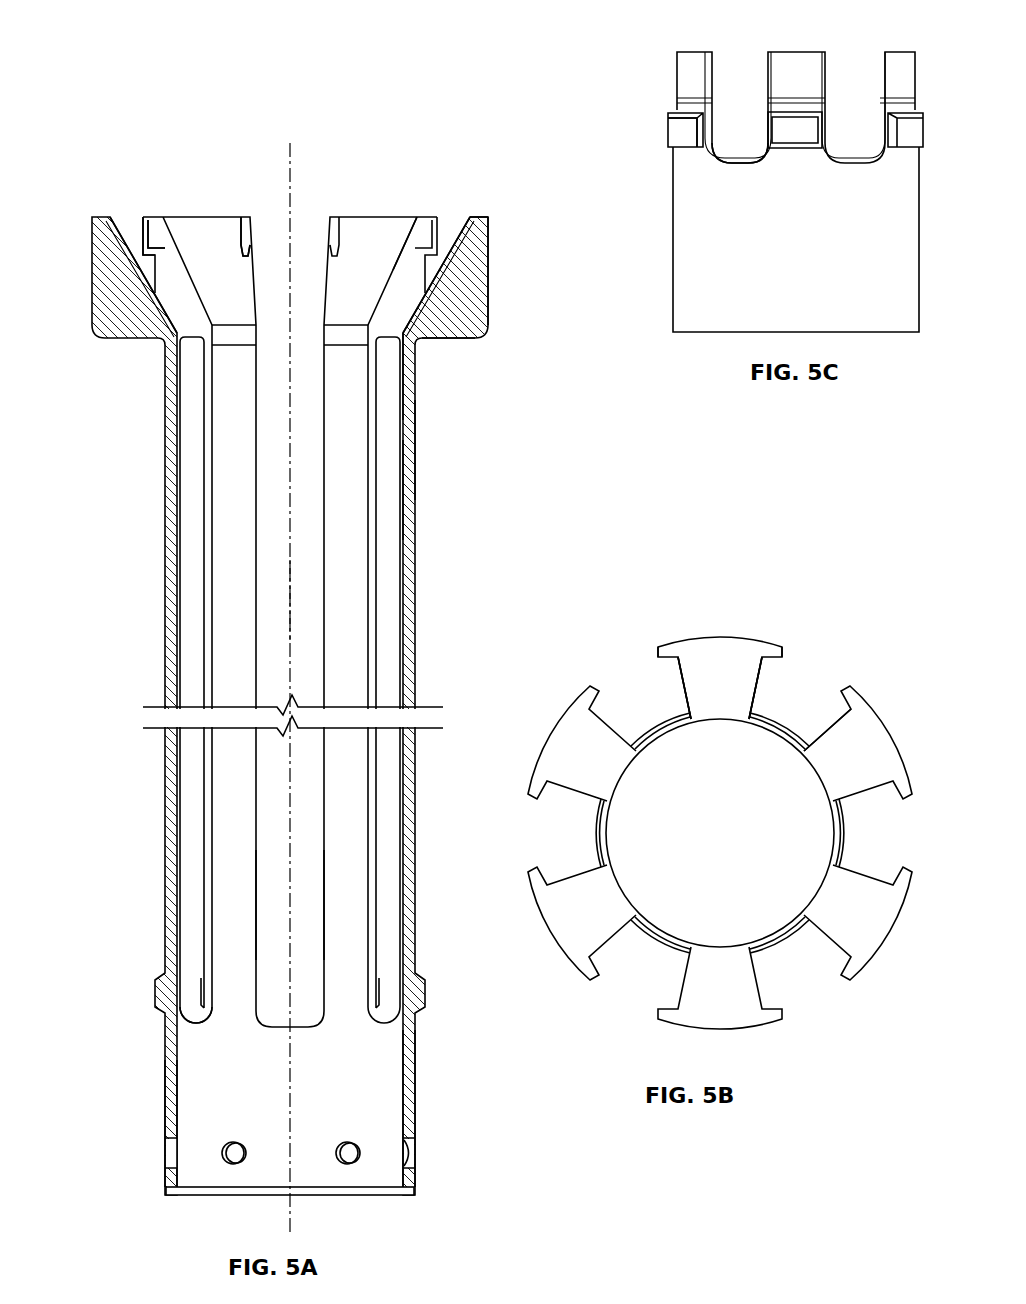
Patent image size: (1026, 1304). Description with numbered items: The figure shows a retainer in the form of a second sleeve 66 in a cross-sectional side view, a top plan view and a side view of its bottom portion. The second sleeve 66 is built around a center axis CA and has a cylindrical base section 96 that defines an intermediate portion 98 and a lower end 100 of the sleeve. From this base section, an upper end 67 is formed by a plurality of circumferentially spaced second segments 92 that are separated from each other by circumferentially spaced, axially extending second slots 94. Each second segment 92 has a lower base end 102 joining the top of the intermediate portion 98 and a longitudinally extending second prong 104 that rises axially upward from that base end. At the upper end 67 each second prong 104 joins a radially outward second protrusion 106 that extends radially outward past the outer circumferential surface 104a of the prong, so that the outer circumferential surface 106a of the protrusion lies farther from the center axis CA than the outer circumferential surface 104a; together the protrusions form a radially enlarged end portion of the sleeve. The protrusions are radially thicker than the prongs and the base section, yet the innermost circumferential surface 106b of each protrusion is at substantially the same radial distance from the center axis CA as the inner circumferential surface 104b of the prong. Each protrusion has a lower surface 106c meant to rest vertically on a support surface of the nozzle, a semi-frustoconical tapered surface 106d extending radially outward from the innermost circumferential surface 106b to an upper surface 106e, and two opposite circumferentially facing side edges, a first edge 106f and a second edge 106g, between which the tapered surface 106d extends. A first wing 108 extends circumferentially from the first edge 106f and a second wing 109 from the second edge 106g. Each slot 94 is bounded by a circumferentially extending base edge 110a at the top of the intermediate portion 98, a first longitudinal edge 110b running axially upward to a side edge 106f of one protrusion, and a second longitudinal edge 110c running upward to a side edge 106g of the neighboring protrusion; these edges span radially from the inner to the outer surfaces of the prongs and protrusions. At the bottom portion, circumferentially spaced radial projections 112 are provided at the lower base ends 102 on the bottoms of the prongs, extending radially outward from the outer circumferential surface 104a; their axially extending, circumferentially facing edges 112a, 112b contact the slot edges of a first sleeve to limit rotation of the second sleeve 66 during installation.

In FIG. 5A, the second sleeve 66 is at (138, 1042).
In FIG. 5C, the second sleeve 66 is at (690, 348).
In FIG. 5B, the second sleeve 66 is at (729, 795).
In FIG. 5A, the upper end 67 is at (87, 147).
In FIG. 5A, the second segments 92 is at (229, 231).
In FIG. 5B, the second segments 92 is at (729, 795).
In FIG. 5A, the second slots 94 is at (280, 200).
In FIG. 5B, the second slots 94 is at (833, 670).
In FIG. 5A, the cylindrical base section 96 is at (410, 1115).
In FIG. 5A, the intermediate portion 98 is at (140, 1088).
In FIG. 5A, the lower end 100 is at (138, 1207).
In FIG. 5A, the lower base end 102 is at (230, 1028).
In FIG. 5C, the lower base end 102 is at (707, 173).
In FIG. 5A, the second prong 104 is at (347, 640).
In FIG. 5C, the second prong 104 is at (748, 201).
In FIG. 5A, the outer circumferential surface 104a is at (417, 452).
In FIG. 5A, the inner circumferential surface 104b is at (404, 495).
In FIG. 5A, the radially outward second protrusion 106 is at (395, 227).
In FIG. 5B, the radially outward second protrusion 106 is at (712, 648).
In FIG. 5A, the outer circumferential surface 106a is at (490, 267).
In FIG. 5A, the innermost circumferential surface 106b is at (385, 338).
In FIG. 5A, the lower surface 106c is at (447, 335).
In FIG. 5A, the tapered surface 106d is at (360, 232).
In FIG. 5A, the upper surface 106e is at (480, 215).
In FIG. 5A, the first edge 106f is at (182, 305).
In FIG. 5B, the first edge 106f is at (687, 710).
In FIG. 5A, the second edge 106g is at (403, 300).
In FIG. 5B, the second edge 106g is at (760, 672).
In FIG. 5A, the first wing 108 is at (145, 222).
In FIG. 5B, the first wing 108 is at (655, 652).
In FIG. 5A, the second wing 109 is at (246, 220).
In FIG. 5B, the second wing 109 is at (782, 650).
In FIG. 5A, the base edge 110a is at (300, 1028).
In FIG. 5B, the base edge 110a is at (660, 735).
In FIG. 5A, the first longitudinal edge 110b is at (256, 902).
In FIG. 5B, the first longitudinal edge 110b is at (637, 748).
In FIG. 5A, the second longitudinal edge 110c is at (324, 902).
In FIG. 5B, the second longitudinal edge 110c is at (690, 727).
In FIG. 5C, the radial projections 112 is at (680, 127).
In FIG. 5C, the circumferentially facing edge 112a is at (698, 127).
In FIG. 5C, the circumferentially facing edge 112b is at (678, 127).
In FIG. 5A, the center axis CA is at (290, 602).